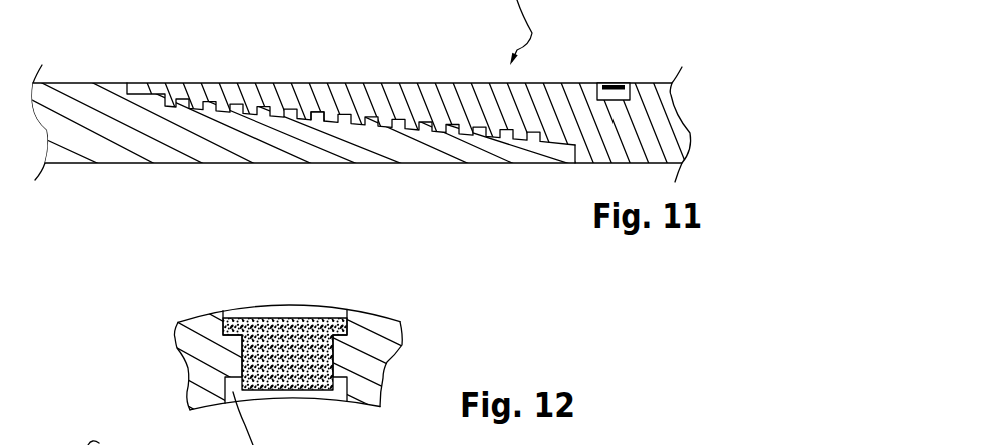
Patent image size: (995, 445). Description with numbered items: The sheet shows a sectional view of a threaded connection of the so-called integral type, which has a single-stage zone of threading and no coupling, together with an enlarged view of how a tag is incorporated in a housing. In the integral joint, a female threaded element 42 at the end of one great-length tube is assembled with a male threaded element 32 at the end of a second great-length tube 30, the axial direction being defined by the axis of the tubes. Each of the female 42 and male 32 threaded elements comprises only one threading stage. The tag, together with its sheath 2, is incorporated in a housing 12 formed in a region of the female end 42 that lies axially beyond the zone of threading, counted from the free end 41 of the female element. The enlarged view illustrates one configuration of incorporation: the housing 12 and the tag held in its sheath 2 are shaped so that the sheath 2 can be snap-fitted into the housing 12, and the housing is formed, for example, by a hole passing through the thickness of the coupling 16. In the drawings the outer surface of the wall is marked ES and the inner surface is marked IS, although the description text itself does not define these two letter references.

In FIG. 11, the sheath 2 is at (612, 83).
In FIG. 12, the sheath 2 is at (293, 323).
In FIG. 11, the housing 12 is at (627, 83).
In FIG. 12, the coupling 16 is at (385, 332).
In FIG. 11, the tube 30 is at (126, 173).
In FIG. 11, the male threaded element 32 is at (322, 118).
In FIG. 11, the free end 41 is at (127, 83).
In FIG. 11, the female threaded element 42 is at (320, 110).
In FIG. 11, the outer side ES is at (438, 83).
In FIG. 12, the outer side ES is at (235, 307).
In FIG. 11, the inner side IS is at (575, 163).
In FIG. 12, the inner side IS is at (198, 412).